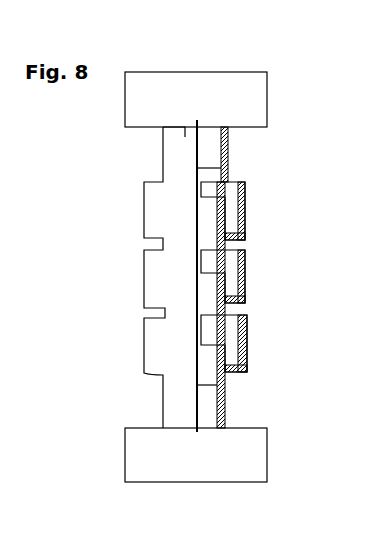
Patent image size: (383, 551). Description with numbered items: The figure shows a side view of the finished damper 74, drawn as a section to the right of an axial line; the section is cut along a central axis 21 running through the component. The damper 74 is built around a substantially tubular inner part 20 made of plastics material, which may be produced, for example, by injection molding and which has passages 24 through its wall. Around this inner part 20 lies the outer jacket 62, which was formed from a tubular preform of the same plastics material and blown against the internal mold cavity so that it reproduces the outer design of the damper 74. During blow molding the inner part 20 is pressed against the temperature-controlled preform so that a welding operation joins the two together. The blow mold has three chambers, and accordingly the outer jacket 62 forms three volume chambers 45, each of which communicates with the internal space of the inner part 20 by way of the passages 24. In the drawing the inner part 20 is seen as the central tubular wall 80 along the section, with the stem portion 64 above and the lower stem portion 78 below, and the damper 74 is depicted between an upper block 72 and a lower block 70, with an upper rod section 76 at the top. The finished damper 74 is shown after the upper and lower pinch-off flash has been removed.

The upper housing block 72 is at (217, 95).
The lower housing block 70 is at (224, 462).
The centerline / axis 21 is at (205, 368).
The upper rod section 76 is at (181, 128).
The damper 74 is at (125, 278).
The upper stem 64 is at (222, 172).
The inner stem wall 80 is at (227, 222).
The volume chambers 45 is at (232, 198).
The outer jacket 62 is at (245, 274).
The passages 24 is at (215, 333).
The inner part 20 is at (223, 360).
The lower stem section 78 is at (208, 428).